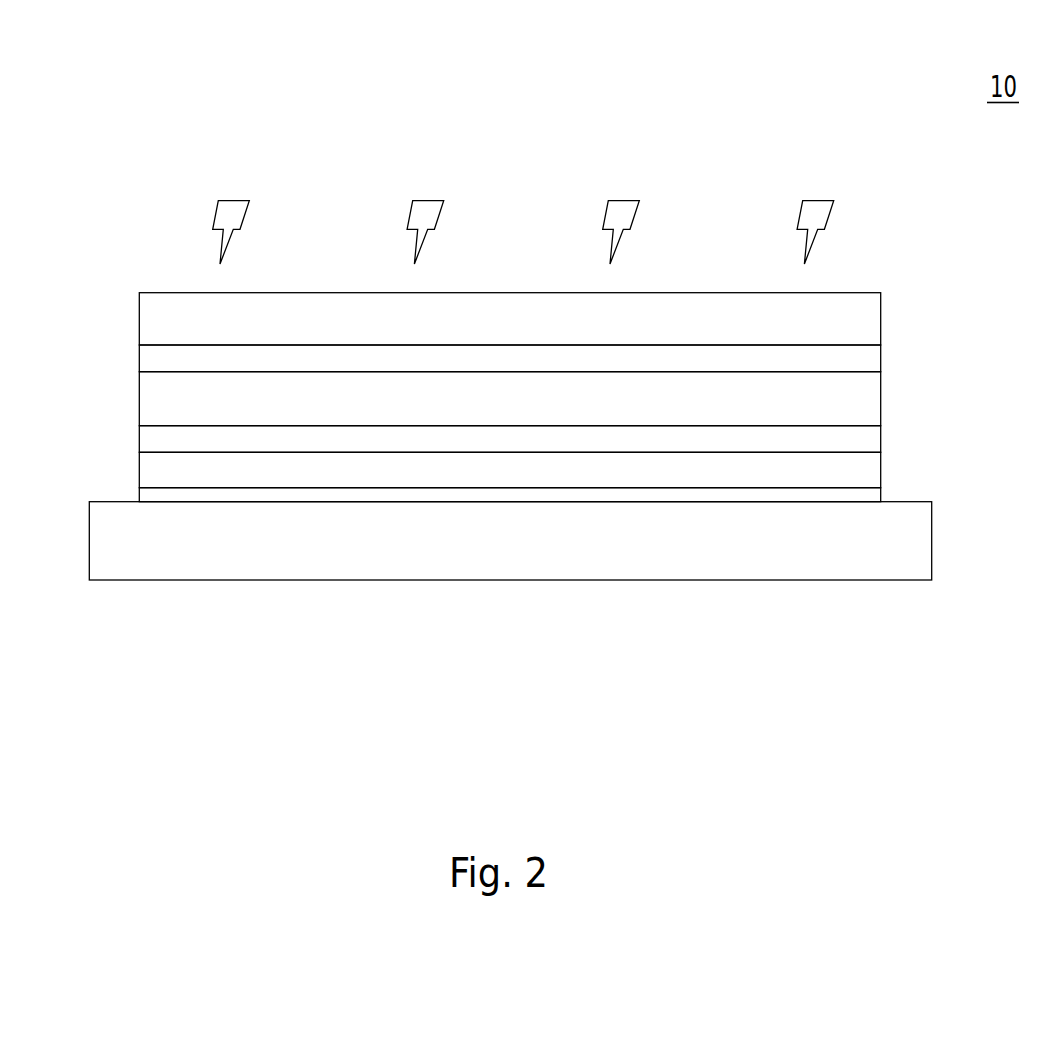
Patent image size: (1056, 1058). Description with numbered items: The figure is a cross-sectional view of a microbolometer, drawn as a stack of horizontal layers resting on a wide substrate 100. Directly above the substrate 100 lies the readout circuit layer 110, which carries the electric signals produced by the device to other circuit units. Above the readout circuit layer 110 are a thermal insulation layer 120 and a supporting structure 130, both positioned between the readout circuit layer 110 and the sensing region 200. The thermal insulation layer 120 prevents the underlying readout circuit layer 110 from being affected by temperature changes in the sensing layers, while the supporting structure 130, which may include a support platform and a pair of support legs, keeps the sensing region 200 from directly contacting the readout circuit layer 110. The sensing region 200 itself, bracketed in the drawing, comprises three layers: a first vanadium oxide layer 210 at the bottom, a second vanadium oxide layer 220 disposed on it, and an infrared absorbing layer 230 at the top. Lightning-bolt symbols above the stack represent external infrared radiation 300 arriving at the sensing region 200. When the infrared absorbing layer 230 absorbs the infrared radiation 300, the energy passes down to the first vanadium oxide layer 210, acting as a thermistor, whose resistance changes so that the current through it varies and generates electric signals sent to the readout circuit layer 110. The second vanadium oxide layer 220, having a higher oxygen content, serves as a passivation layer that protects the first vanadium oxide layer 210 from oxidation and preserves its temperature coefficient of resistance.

The substrate 100 is at (918, 544).
The readout circuit layer 110 is at (878, 492).
The thermal insulation layer 120 is at (878, 468).
The supporting structure 130 is at (878, 437).
The sensing region 200 is at (523, 358).
The first vanadium oxide layer 210 is at (878, 396).
The second vanadium oxide layer 220 is at (878, 362).
The infrared absorbing layer 230 is at (878, 309).
The infrared radiation 300 is at (822, 213).